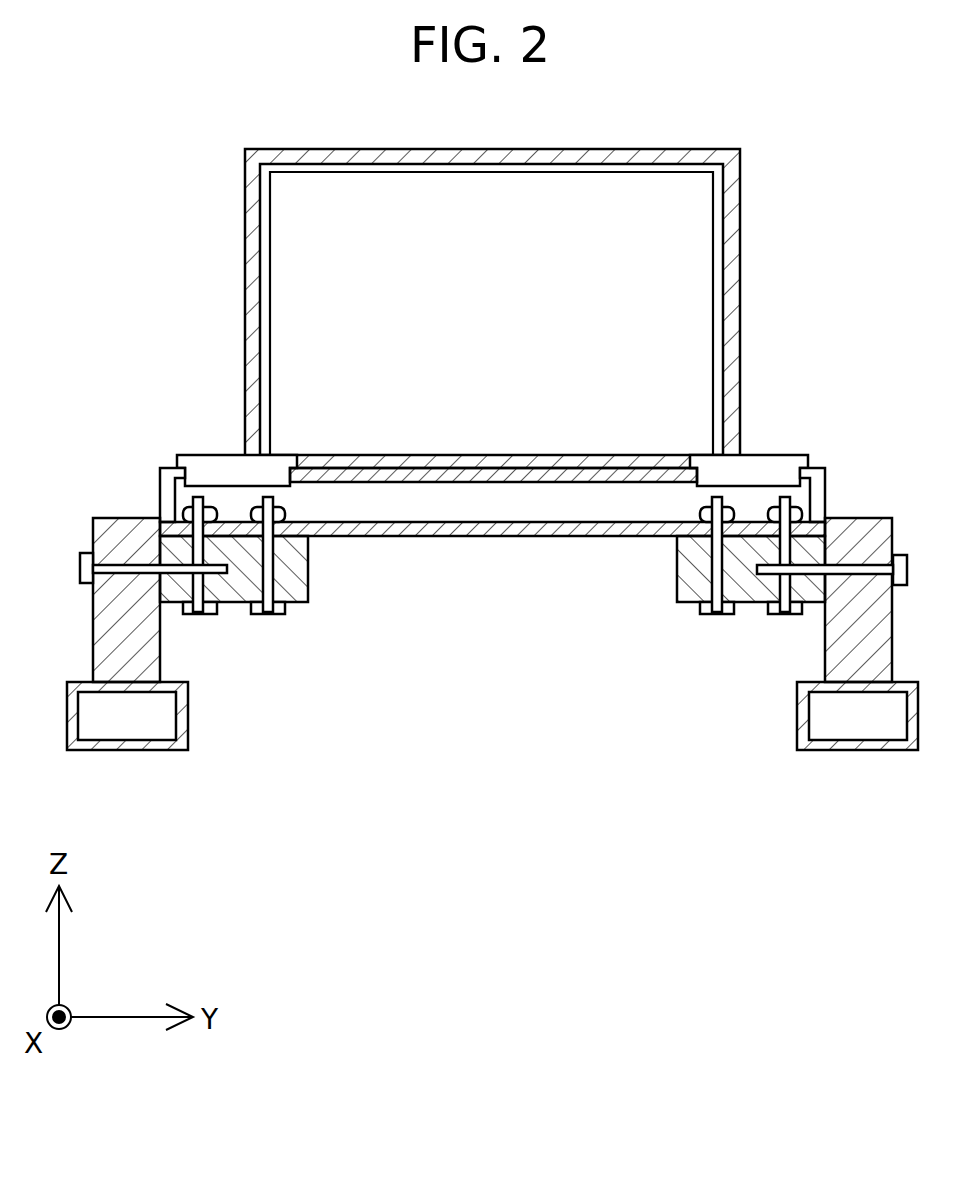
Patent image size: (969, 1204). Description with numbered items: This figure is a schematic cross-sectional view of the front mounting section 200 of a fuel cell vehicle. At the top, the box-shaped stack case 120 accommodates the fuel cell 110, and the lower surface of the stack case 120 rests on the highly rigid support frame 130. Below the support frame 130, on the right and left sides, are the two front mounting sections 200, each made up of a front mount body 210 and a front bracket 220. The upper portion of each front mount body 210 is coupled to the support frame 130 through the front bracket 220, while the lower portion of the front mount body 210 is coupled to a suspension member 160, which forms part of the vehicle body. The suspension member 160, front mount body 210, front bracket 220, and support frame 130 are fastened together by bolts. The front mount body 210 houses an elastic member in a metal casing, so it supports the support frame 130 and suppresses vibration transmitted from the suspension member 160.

The fuel cell 110 is at (519, 331).
The stack case 120 is at (740, 193).
The support frame 130 is at (492, 537).
The suspension member 160 is at (188, 720).
The front mounting section 200 is at (492, 626).
The front mount body 210 is at (160, 640).
The front bracket 220 is at (233, 603).